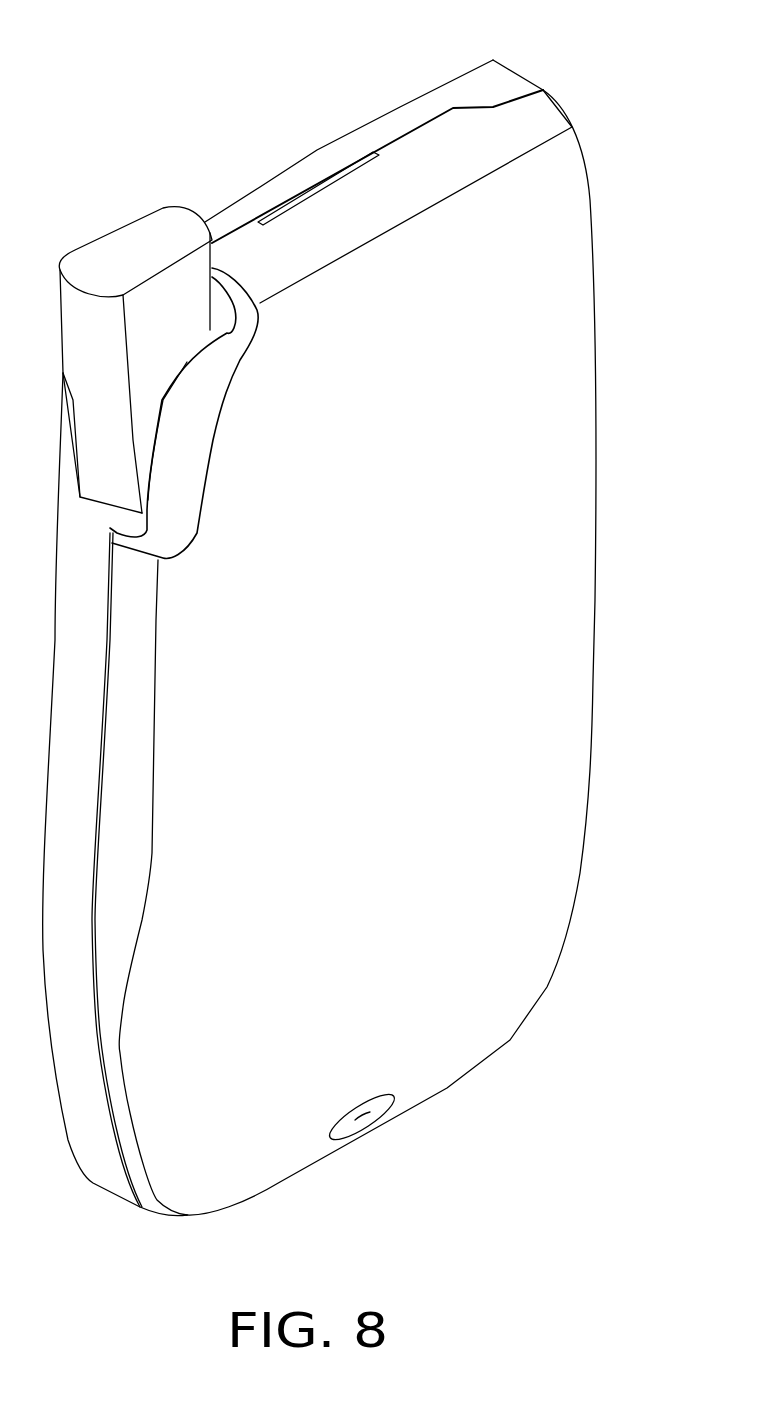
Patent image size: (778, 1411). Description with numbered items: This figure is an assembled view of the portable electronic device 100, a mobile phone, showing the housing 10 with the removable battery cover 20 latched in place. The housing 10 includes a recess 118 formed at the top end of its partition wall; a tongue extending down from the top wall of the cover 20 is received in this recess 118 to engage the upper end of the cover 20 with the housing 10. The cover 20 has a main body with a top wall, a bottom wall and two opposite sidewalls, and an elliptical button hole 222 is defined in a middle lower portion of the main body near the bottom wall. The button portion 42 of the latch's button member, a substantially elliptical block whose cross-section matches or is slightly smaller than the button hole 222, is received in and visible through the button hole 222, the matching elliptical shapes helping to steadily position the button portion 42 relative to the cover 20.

The portable electronic device 100 is at (280, 42).
The housing 10 is at (463, 92).
The removable battery cover 20 is at (508, 603).
The recess 118 is at (315, 187).
The button hole 222 is at (377, 1095).
The button portion 42 is at (367, 1115).